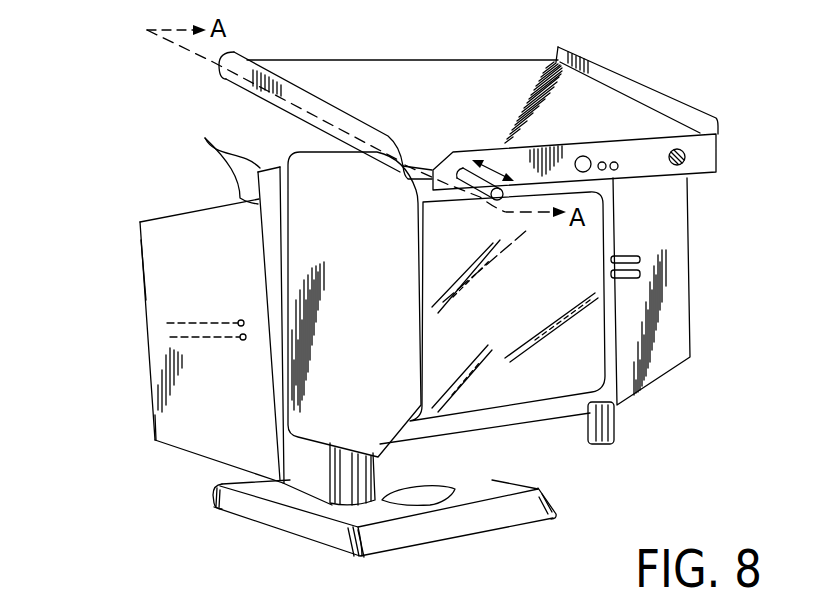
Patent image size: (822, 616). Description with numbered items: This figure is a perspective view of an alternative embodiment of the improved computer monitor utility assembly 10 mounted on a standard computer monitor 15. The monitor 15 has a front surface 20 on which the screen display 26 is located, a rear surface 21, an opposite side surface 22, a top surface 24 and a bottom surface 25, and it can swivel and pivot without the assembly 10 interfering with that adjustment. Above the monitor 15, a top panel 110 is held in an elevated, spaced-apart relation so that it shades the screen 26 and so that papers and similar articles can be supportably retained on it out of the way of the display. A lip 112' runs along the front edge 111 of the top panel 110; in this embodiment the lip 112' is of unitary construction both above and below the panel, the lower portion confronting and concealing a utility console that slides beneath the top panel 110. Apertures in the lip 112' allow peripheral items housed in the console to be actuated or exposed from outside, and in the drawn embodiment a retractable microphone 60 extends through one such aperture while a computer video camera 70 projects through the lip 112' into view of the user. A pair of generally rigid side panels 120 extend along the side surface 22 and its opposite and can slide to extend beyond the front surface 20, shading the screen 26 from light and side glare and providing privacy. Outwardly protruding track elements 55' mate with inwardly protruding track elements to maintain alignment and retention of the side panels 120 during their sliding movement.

The computer monitor utility assembly 10 is at (137, 80).
The top panel 110 is at (503, 97).
The top surface 24 is at (223, 158).
The front edge 111 is at (405, 174).
The lip 112' is at (585, 112).
The computer video camera 70 is at (686, 163).
The microphone 60 is at (472, 198).
The side surface 22 is at (211, 271).
The rear surface 21 is at (165, 282).
The outwardly protruding track elements 55' is at (405, 307).
The computer monitor 15 is at (173, 418).
The bottom surface 25 is at (192, 456).
The side panels 120 is at (368, 254).
The screen display 26 is at (531, 299).
The front surface 20 is at (616, 408).